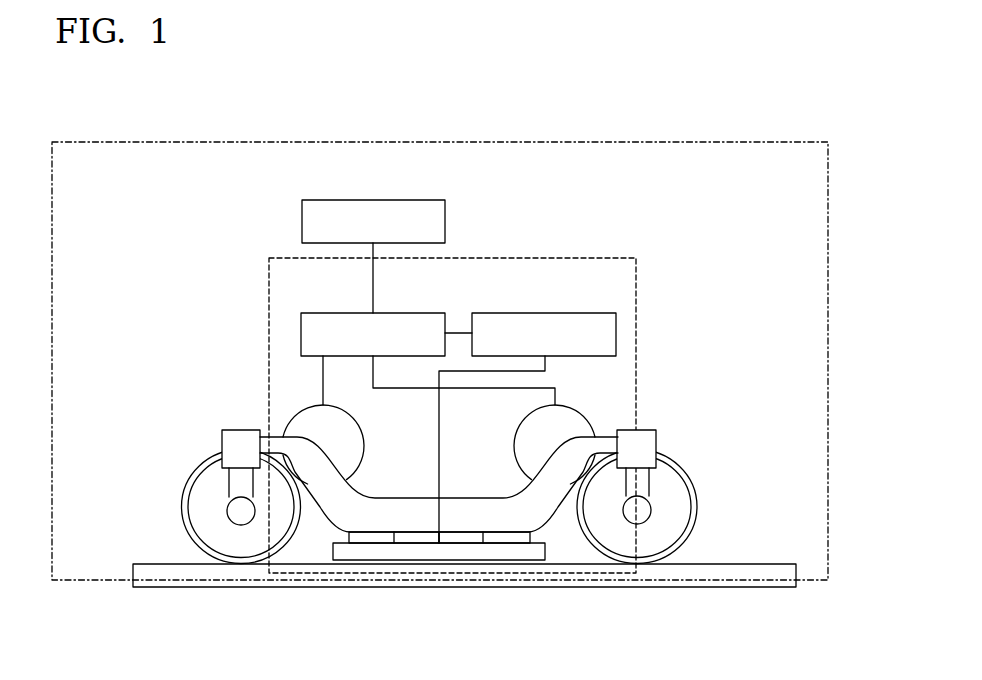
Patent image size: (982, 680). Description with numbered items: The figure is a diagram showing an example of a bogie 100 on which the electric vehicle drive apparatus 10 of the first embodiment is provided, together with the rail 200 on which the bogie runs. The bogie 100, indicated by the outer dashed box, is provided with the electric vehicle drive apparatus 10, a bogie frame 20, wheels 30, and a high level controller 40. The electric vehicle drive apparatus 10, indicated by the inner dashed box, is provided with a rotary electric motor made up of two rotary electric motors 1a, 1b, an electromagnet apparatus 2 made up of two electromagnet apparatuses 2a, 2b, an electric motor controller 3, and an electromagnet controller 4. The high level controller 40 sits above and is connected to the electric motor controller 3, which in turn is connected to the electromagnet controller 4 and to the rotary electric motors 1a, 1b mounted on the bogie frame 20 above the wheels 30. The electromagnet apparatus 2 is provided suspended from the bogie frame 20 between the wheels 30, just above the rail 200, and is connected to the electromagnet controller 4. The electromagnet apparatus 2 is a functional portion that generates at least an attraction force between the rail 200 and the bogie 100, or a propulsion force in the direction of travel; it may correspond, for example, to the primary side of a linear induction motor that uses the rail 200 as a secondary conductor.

The bogie 100 is at (653, 143).
The electric vehicle drive apparatus 10 is at (578, 257).
The high level controller 40 is at (401, 200).
The electric motor controller 3 is at (301, 337).
The electromagnet controller 4 is at (616, 333).
The rotary electric motor 1a is at (292, 410).
The rotary electric motor 1b is at (588, 408).
The electromagnet apparatus 2 is at (467, 583).
The electromagnet apparatus 2a is at (394, 537).
The electromagnet apparatus 2b is at (545, 552).
The bogie frame 20 is at (222, 445).
The wheels 30 is at (182, 515).
The rail 200 is at (333, 588).